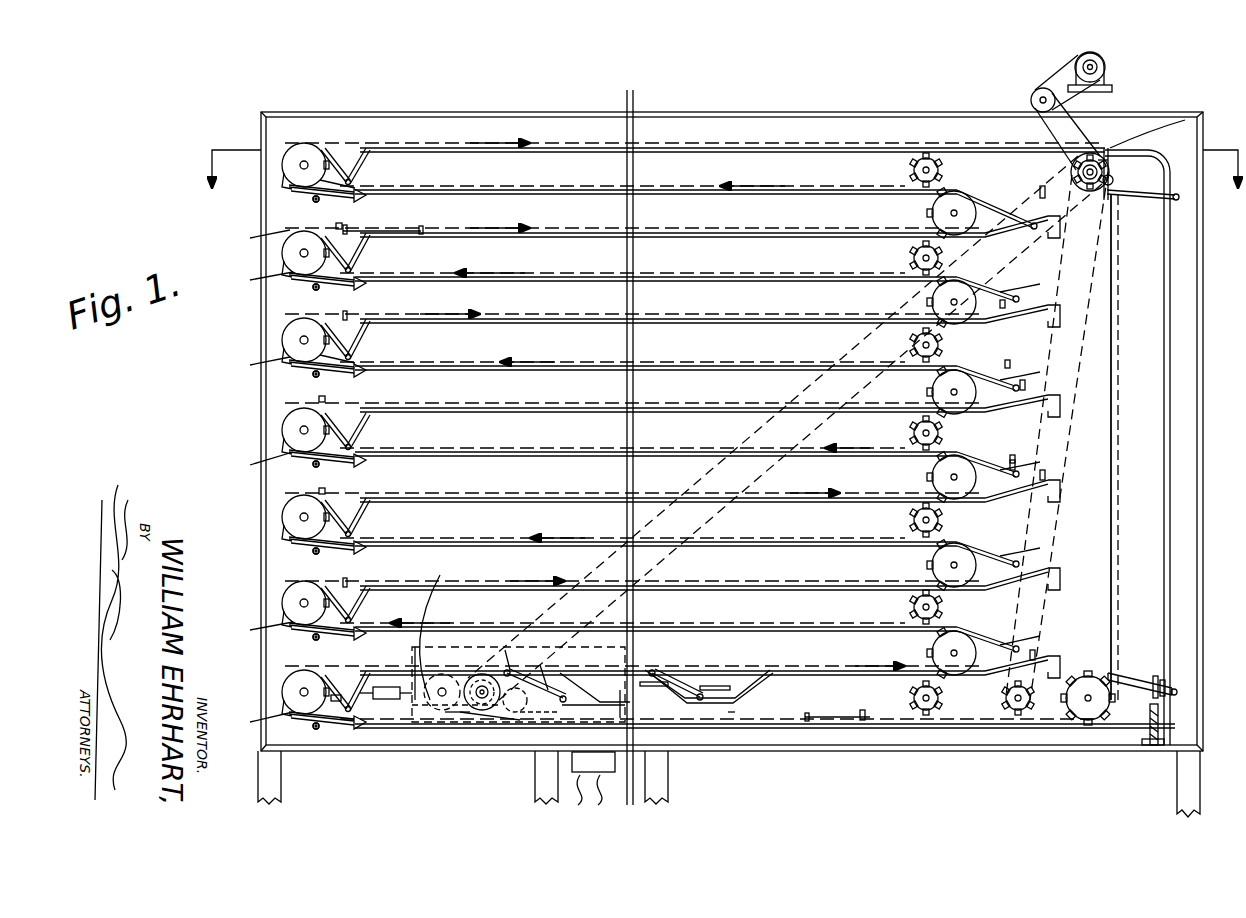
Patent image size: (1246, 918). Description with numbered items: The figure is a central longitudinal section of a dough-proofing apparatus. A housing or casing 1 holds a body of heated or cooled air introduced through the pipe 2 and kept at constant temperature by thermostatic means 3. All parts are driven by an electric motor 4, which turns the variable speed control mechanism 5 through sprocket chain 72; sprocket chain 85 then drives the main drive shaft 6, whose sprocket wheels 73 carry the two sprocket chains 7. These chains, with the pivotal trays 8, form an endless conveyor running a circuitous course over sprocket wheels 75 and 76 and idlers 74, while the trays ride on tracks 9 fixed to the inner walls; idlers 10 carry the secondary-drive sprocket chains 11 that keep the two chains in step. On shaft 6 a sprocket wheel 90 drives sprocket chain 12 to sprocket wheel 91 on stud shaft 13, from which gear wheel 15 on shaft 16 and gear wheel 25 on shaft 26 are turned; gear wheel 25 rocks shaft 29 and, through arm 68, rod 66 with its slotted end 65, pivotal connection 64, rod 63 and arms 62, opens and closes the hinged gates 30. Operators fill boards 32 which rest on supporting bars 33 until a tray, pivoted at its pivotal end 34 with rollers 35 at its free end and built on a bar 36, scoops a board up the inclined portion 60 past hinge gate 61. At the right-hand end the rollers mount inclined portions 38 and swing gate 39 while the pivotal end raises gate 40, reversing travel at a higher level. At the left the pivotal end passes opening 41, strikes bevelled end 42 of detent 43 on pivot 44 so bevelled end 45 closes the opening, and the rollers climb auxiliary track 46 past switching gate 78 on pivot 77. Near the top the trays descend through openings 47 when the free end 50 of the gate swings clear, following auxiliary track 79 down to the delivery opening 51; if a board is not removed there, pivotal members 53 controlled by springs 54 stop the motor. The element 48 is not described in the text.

The housing or casing 1 is at (690, 120).
The pipe 2 is at (717, 469).
The thermostatic means 3 is at (1210, 140).
The electric motor 4 is at (1108, 60).
The variable speed control mechanism 5 is at (1032, 95).
The main drive shaft 6 is at (1100, 200).
The sprocket chains 7 is at (712, 420).
The pivotal trays 8 is at (848, 765).
The tracks 9 is at (1083, 780).
The idlers 10 is at (912, 170).
The sprocket chains 11 is at (1057, 436).
The sprocket chain 12 is at (815, 420).
The stud shaft 13 is at (482, 688).
The gear wheel 15 is at (413, 674).
The shaft 16 is at (442, 688).
The gear wheel 25 is at (545, 715).
The shaft 26 is at (510, 712).
The shaft 29 is at (440, 712).
The hinged gates 30 is at (606, 672).
The boards 32 is at (1135, 690).
The supporting bars 33 is at (505, 800).
The pivotal end 34 is at (835, 703).
The rollers 35 is at (424, 226).
The bar 36 is at (870, 185).
The inclined portions 38 is at (1055, 300).
The gate 39 is at (1029, 445).
The gate 40 is at (997, 415).
The opening 41 is at (355, 188).
The bevelled end 42 is at (257, 497).
The detent 43 is at (256, 295).
The pivot 44 is at (250, 742).
The bevelled end 45 is at (322, 765).
The auxiliary track 46 is at (312, 148).
The openings 47 is at (1164, 118).
The rod 48 is at (1110, 150).
The free end 50 is at (1112, 158).
The opening 51 is at (1170, 690).
The pivotal members 53 is at (1160, 720).
The springs 54 is at (1150, 748).
The inclined portion 60 is at (610, 703).
The hinge gate 61 is at (655, 668).
The arms 62 is at (548, 665).
The rod 63 is at (505, 650).
The pivotal connection 64 is at (415, 647).
The slotted end 65 is at (450, 630).
The rod 66 is at (400, 705).
The arm 68 is at (465, 716).
The sprocket chain 72 is at (1060, 70).
The sprocket wheels 73 is at (1070, 172).
The idlers 74 is at (1075, 712).
The sprocket wheels 75 is at (281, 163).
The sprocket wheels 76 is at (940, 297).
The pivot 77 is at (370, 600).
The switching gate 78 is at (362, 148).
The auxiliary track 79 is at (1115, 320).
The sprocket chain 85 is at (1068, 130).
The sprocket wheel 90 is at (1104, 182).
The sprocket wheel 91 is at (490, 732).